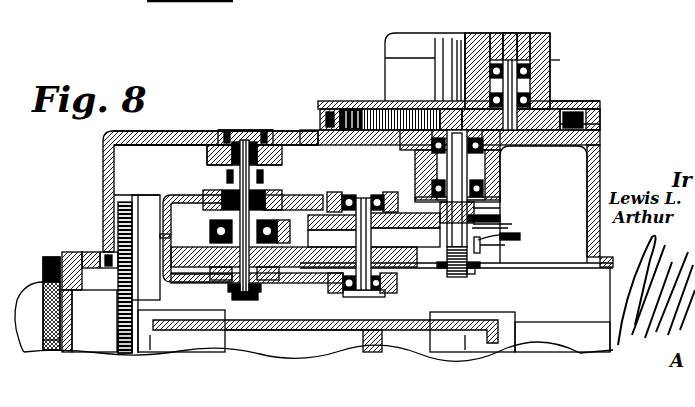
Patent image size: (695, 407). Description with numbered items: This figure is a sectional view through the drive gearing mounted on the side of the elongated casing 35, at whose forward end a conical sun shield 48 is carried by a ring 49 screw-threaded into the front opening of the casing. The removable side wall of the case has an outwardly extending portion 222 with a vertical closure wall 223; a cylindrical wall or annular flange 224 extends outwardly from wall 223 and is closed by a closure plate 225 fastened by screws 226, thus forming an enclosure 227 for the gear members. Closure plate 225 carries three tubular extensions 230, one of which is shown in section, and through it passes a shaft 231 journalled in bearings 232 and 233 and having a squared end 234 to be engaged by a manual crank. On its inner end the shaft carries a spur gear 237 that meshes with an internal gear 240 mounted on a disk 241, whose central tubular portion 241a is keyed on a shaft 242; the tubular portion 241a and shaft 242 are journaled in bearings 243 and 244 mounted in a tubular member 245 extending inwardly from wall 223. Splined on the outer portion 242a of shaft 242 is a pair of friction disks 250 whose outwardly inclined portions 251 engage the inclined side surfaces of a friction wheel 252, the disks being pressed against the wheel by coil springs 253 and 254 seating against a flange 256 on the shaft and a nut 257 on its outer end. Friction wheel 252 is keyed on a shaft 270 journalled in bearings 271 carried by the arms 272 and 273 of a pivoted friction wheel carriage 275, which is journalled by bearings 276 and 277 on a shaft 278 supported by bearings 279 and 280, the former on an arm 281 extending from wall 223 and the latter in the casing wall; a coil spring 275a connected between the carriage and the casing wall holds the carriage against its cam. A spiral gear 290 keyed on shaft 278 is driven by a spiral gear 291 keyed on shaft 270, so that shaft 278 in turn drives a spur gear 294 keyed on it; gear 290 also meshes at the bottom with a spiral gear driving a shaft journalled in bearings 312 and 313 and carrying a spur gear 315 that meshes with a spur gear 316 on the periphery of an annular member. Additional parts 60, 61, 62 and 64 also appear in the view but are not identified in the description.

The outwardly extending portion 222 is at (103, 177).
The vertical closure wall 223 is at (165, 131).
The cylindrical wall or annular flange 224 is at (330, 103).
The closure plate 225 is at (570, 100).
The screws 226 is at (333, 101).
The enclosure 227 is at (602, 126).
The tubular extension 230 is at (384, 85).
The shaft 231 is at (553, 80).
The bearing 232 is at (555, 33).
The bearing 233 is at (602, 102).
The squared end 234 is at (514, 35).
The spur gear 237 is at (410, 103).
The internal gear 240 is at (365, 110).
The disk 241 is at (546, 152).
The central tubular portion 241a is at (440, 168).
The shaft 242 is at (470, 160).
The outer portion of shaft 242a is at (478, 246).
The bearing 243 is at (440, 150).
The bearing 244 is at (442, 183).
The tubular member 245 is at (500, 177).
The friction disks 250 is at (485, 210).
The outwardly inclined portions 251 is at (509, 218).
The friction wheel 252 is at (388, 233).
The coil spring 253 is at (480, 205).
The coil spring 254 is at (470, 262).
The flange 256 is at (508, 228).
The nut 257 is at (472, 273).
The shaft 270 is at (366, 296).
The bearings 271 is at (330, 193).
The arm 272 is at (272, 283).
The arm 273 is at (310, 203).
The friction wheel carriage 275 is at (195, 268).
The coil spring 275a is at (163, 236).
The bearing 276 is at (217, 285).
The bearing 277 is at (210, 200).
The shaft 278 is at (222, 130).
The bearing 279 is at (212, 232).
The bearing 280 is at (268, 133).
The arm 281 is at (170, 200).
The spiral gear 290 is at (270, 330).
The spiral gear 291 is at (323, 323).
The spur gear 294 is at (213, 173).
The bearing 312 is at (312, 328).
The bearing 313 is at (148, 283).
The spur gear 315 is at (118, 208).
The spur gear 316 is at (125, 353).
The elongated casing 35 is at (62, 250).
The conical sun shield 48 is at (45, 292).
The ring 49 is at (53, 353).
The base 60 is at (415, 335).
The block 61 is at (507, 313).
The recess 62 is at (150, 350).
The base 64 is at (578, 328).